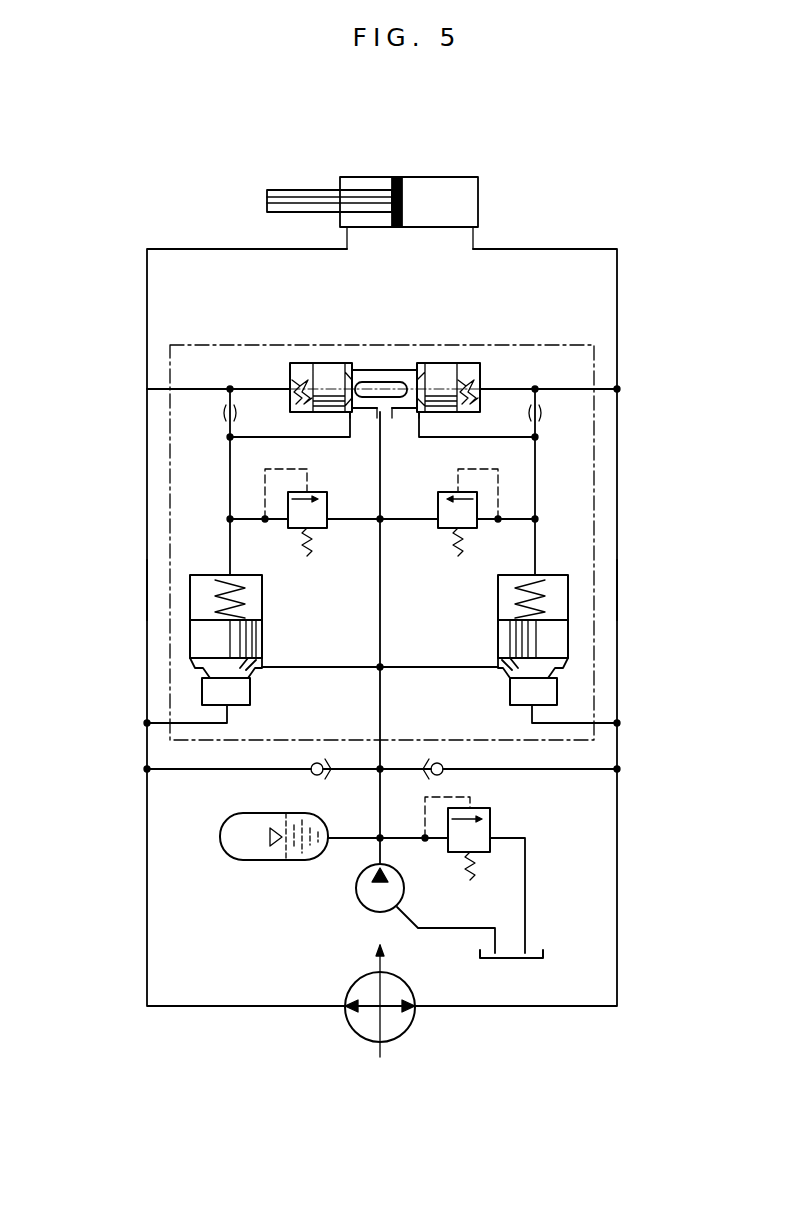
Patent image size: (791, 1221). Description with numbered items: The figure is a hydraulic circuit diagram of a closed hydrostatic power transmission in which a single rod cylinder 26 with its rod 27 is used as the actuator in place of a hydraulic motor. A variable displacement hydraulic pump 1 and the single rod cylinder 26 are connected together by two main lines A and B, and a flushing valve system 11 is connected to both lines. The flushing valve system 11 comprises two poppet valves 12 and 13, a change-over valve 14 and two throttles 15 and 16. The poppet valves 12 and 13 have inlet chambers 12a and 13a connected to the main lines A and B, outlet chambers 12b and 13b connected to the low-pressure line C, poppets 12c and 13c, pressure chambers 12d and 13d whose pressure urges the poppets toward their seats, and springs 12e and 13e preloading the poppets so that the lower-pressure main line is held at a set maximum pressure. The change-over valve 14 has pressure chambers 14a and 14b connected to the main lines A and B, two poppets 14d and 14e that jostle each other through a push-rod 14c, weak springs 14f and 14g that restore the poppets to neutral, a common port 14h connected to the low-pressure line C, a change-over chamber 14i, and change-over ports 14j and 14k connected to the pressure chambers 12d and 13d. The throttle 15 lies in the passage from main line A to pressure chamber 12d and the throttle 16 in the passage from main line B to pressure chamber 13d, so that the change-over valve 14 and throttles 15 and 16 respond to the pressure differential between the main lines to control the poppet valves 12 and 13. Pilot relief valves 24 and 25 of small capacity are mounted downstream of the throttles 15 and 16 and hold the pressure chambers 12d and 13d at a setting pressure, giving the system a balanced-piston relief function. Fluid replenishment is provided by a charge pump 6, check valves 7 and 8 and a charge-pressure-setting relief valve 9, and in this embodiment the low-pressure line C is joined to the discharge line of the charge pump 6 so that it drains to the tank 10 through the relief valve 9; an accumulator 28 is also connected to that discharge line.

The variable displacement hydraulic pump 1 is at (355, 1028).
The charge pump 6 is at (356, 890).
The check valve 7 is at (318, 776).
The check valve 8 is at (443, 776).
The charge-pressure-setting relief valve 9 is at (490, 830).
The fluid tank 10 is at (535, 953).
The flushing valve system 11 is at (570, 345).
The poppet valve 12 is at (209, 650).
The inlet chamber 12a is at (245, 705).
The outlet chamber 12b is at (258, 672).
The poppet 12c is at (256, 643).
The pressure chamber 12d is at (250, 614).
The spring 12e is at (245, 590).
The poppet valve 13 is at (537, 650).
The inlet chamber 13a is at (510, 705).
The outlet chamber 13b is at (502, 672).
The poppet 13c is at (498, 643).
The pressure chamber 13d is at (512, 614).
The spring 13e is at (515, 590).
The change-over valve 14 is at (382, 388).
The pressure chamber 14a is at (290, 363).
The pressure chamber 14b is at (480, 363).
The push-rod 14c is at (412, 370).
The poppet 14d is at (320, 363).
The poppet 14e is at (458, 363).
The weak spring 14f is at (320, 412).
The weak spring 14g is at (445, 412).
The common port 14h is at (388, 415).
The change-over chamber 14i is at (362, 370).
The change-over port 14j is at (350, 415).
The change-over port 14k is at (420, 415).
The throttle 15 is at (222, 412).
The throttle 16 is at (539, 412).
The pilot relief valve 24 is at (327, 495).
The pilot relief valve 25 is at (438, 495).
The single rod cylinder 26 is at (478, 188).
The piston rod 27 is at (313, 190).
The accumulator 28 is at (236, 860).
The main line A is at (147, 588).
The main line B is at (617, 590).
The low-pressure line C is at (380, 675).